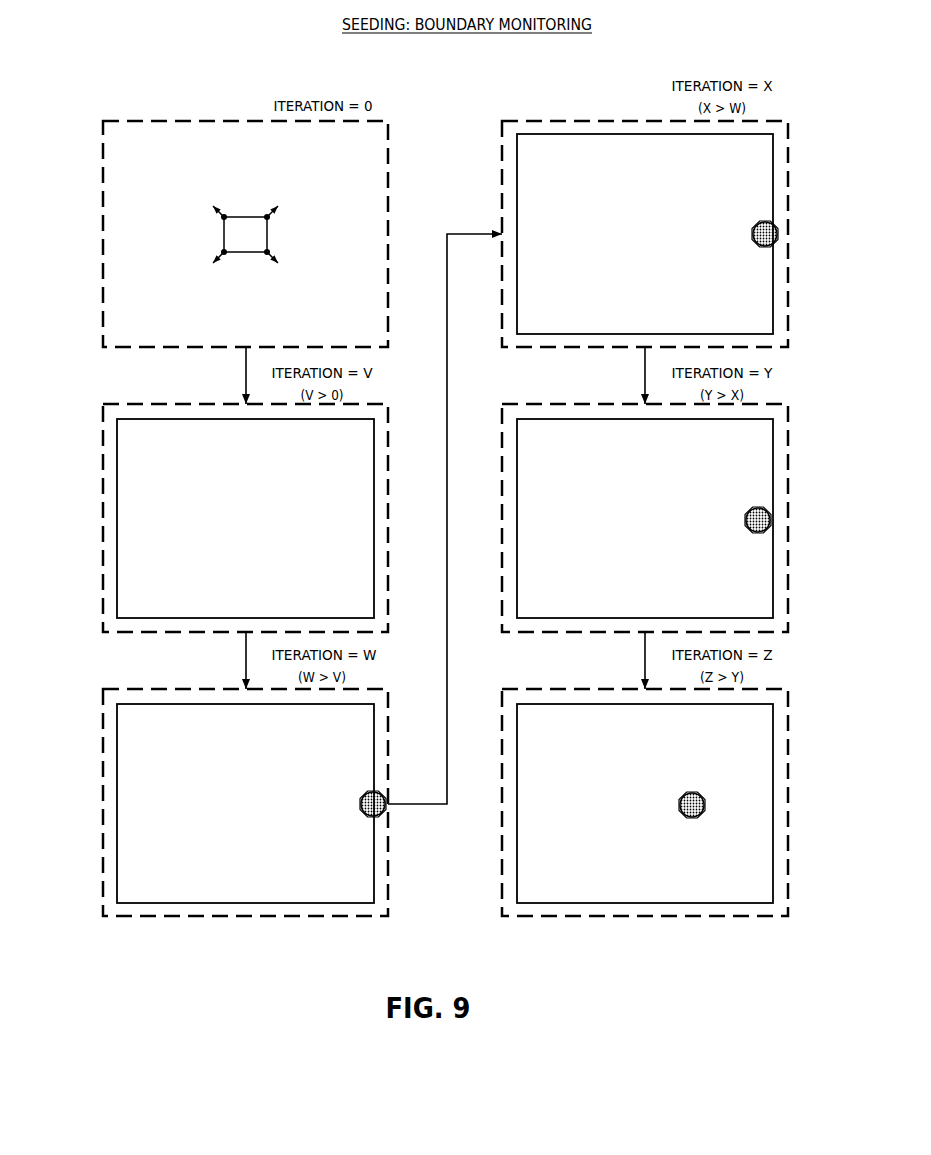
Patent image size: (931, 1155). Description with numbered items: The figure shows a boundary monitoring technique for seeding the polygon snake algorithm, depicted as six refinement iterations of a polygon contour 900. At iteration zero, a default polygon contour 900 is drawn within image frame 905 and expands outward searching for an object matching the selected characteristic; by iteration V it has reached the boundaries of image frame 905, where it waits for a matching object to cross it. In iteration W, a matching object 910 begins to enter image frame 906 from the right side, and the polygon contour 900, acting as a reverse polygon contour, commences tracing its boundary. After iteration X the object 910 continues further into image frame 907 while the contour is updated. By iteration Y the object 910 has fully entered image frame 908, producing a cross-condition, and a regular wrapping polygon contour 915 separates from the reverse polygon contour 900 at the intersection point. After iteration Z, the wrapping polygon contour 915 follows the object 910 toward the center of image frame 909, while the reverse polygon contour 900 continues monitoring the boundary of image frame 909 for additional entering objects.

The polygon contour 900 is at (224, 233).
The image frame 905 is at (135, 121).
The image frame 906 is at (118, 689).
The image frame 907 is at (512, 121).
The image frame 908 is at (538, 404).
The image frame 909 is at (540, 689).
The object 910 is at (363, 795).
The wrapping polygon contour 915 is at (747, 532).